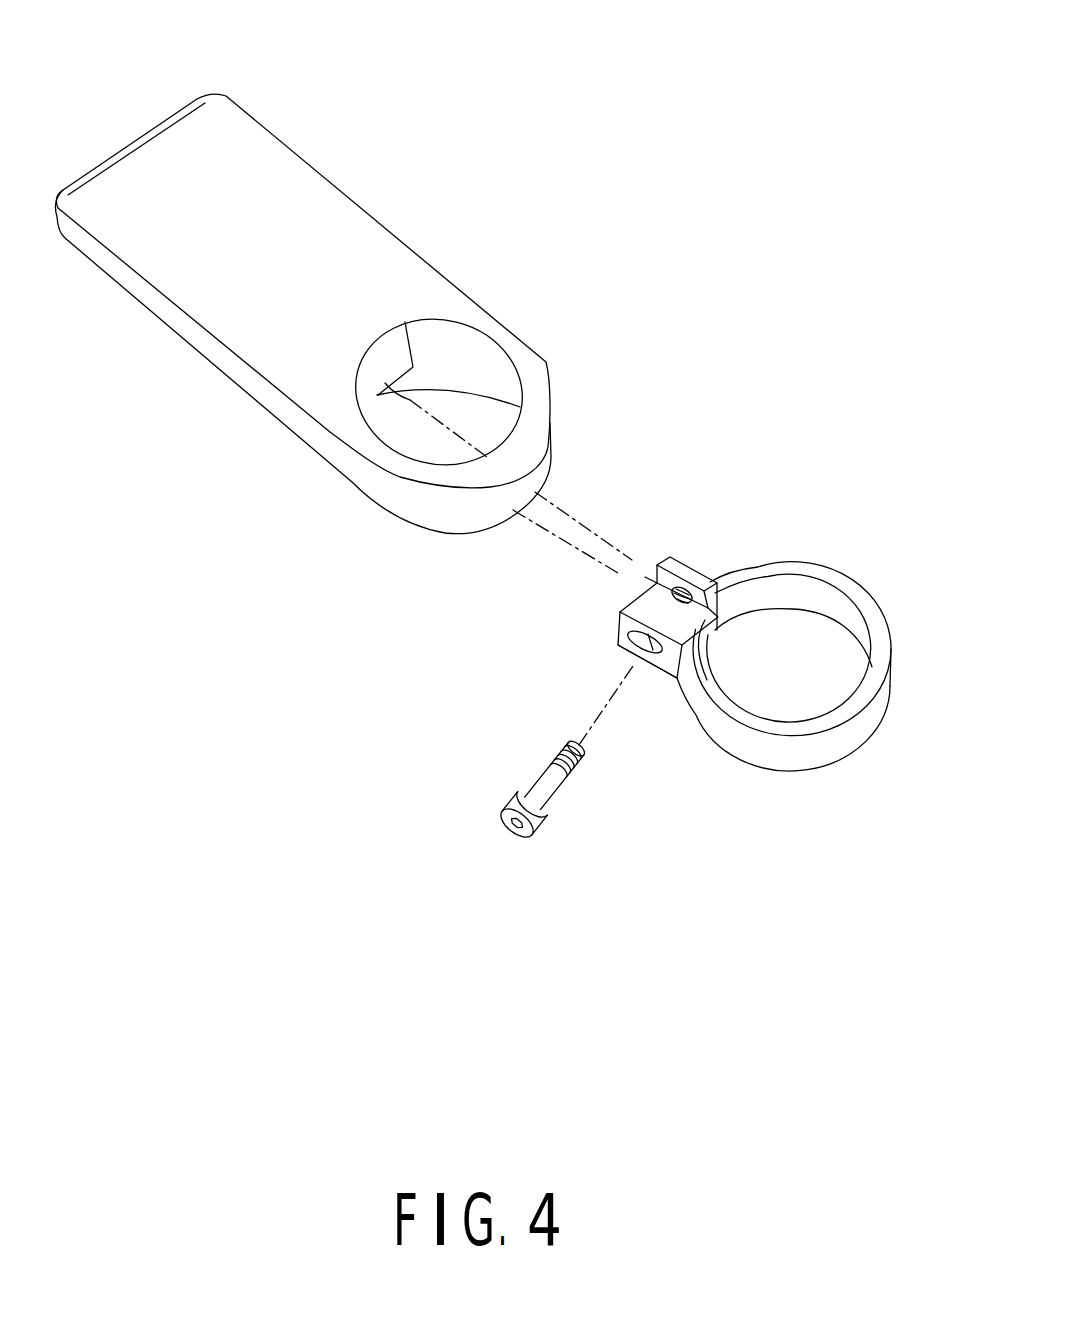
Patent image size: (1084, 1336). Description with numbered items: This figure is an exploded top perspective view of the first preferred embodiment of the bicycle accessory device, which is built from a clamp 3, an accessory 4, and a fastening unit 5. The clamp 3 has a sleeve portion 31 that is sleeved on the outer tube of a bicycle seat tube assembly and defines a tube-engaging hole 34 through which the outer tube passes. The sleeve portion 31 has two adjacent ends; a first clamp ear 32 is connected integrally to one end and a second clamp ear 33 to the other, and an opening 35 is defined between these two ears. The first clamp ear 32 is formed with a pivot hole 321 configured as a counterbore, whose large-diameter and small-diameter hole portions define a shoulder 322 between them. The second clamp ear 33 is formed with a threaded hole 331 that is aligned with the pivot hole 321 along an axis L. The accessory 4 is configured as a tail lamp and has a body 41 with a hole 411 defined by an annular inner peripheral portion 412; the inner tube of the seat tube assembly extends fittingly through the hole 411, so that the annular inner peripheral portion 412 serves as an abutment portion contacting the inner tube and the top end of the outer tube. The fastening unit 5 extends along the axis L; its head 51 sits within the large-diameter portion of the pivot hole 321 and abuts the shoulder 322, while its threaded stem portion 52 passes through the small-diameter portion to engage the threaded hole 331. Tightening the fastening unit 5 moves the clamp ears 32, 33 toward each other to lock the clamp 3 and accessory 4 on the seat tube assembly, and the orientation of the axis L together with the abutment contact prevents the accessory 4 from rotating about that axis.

The clamp 3 is at (881, 592).
The sleeve portion 31 is at (877, 705).
The first clamp ear 32 is at (618, 607).
The pivot hole 321 is at (632, 638).
The shoulder 322 is at (648, 664).
The second clamp ear 33 is at (662, 557).
The threaded hole 331 is at (713, 580).
The tube-engaging hole 34 is at (786, 693).
The opening 35 is at (632, 582).
The accessory 4 is at (396, 170).
The body 41 is at (272, 130).
The hole 411 is at (490, 420).
The annular inner peripheral portion 412 is at (442, 332).
The fastening unit 5 is at (500, 838).
The head 51 is at (537, 830).
The threaded stem portion 52 is at (577, 771).
The axis L is at (695, 560).